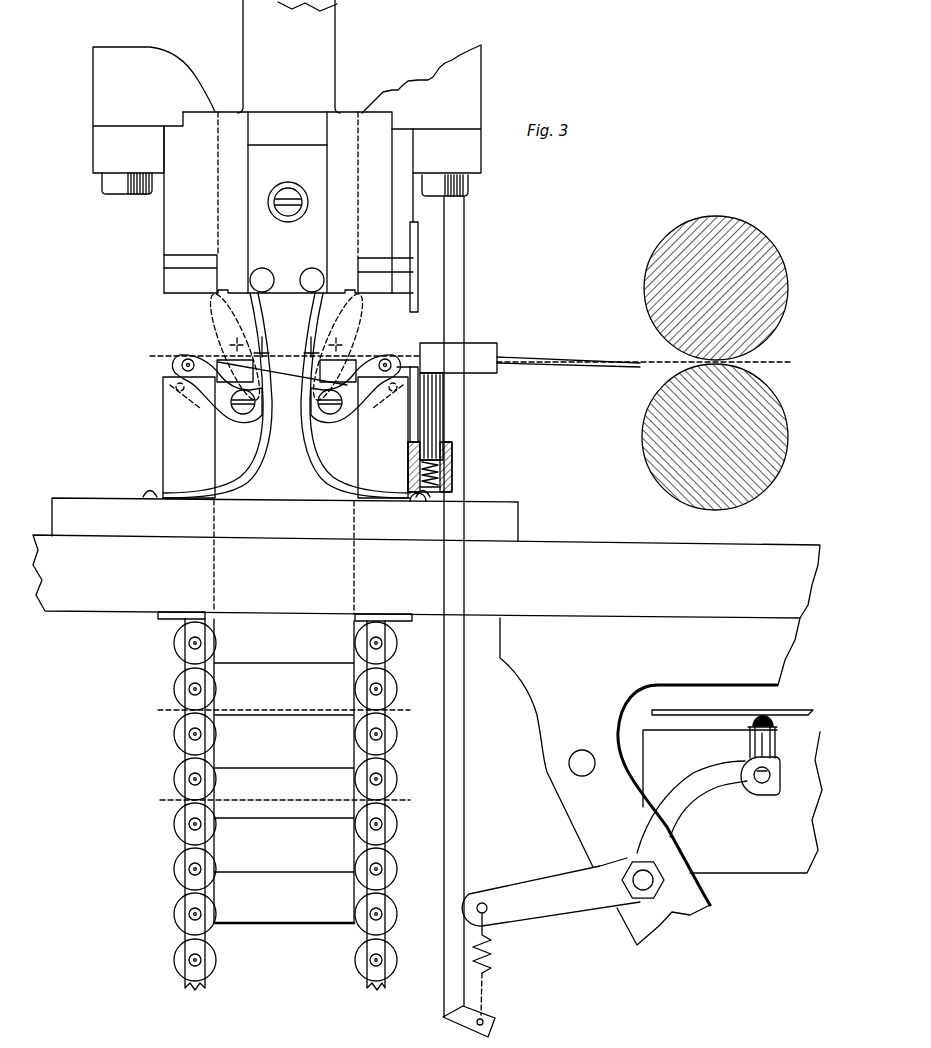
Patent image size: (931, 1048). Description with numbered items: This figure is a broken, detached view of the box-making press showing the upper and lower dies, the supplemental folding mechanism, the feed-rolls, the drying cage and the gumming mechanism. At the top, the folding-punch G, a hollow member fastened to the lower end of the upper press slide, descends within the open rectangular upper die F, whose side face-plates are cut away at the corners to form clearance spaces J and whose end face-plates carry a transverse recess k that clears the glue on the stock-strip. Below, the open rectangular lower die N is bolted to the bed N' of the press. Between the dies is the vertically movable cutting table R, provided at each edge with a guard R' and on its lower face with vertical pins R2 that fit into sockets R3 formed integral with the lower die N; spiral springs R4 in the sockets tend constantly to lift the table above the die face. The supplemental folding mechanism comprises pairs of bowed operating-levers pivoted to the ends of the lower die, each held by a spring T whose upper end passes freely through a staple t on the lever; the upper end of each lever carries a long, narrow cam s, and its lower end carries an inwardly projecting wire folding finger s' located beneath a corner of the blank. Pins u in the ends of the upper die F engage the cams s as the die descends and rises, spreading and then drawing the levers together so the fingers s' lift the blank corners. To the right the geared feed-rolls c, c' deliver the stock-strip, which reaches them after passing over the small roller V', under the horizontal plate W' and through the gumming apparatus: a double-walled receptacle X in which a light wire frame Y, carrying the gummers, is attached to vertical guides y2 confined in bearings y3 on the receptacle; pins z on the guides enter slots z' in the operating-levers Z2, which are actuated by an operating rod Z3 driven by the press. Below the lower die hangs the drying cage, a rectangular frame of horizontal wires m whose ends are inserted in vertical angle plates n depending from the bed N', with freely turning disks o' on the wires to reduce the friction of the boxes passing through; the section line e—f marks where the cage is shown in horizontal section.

The upper die F is at (154, 110).
The folding-punch G is at (289, 56).
The clearance spaces J is at (177, 276).
The transverse recess k is at (223, 291).
The pins u is at (262, 270).
The cam s is at (287, 346).
The staple t is at (313, 325).
The folding finger s' is at (281, 379).
The spring T is at (260, 457).
The lower die N is at (189, 437).
The bed of the press N' is at (426, 576).
The vertically movable cutting table R is at (568, 349).
The guard R' is at (458, 358).
The vertical pins R2 is at (445, 417).
The sockets R3 is at (455, 448).
The spiral springs R4 is at (445, 479).
The feed-roll c is at (721, 288).
The feed-roll c' is at (726, 437).
The horizontal wires m is at (786, 365).
The vertical angle plates n is at (190, 664).
The disks o' is at (279, 801).
The section line e—f e is at (280, 754).
The section line e— f is at (315, 771).
The small roller V' is at (547, 742).
The operating rod Z3 is at (457, 836).
The operating-levers Z2 is at (604, 888).
The horizontal plate W' is at (732, 702).
The light frame Y is at (768, 719).
The vertical guides y2 is at (762, 749).
The bearings y3 is at (748, 750).
The slots z' is at (777, 770).
The pins z is at (759, 786).
The double-walled receptacle X is at (798, 831).